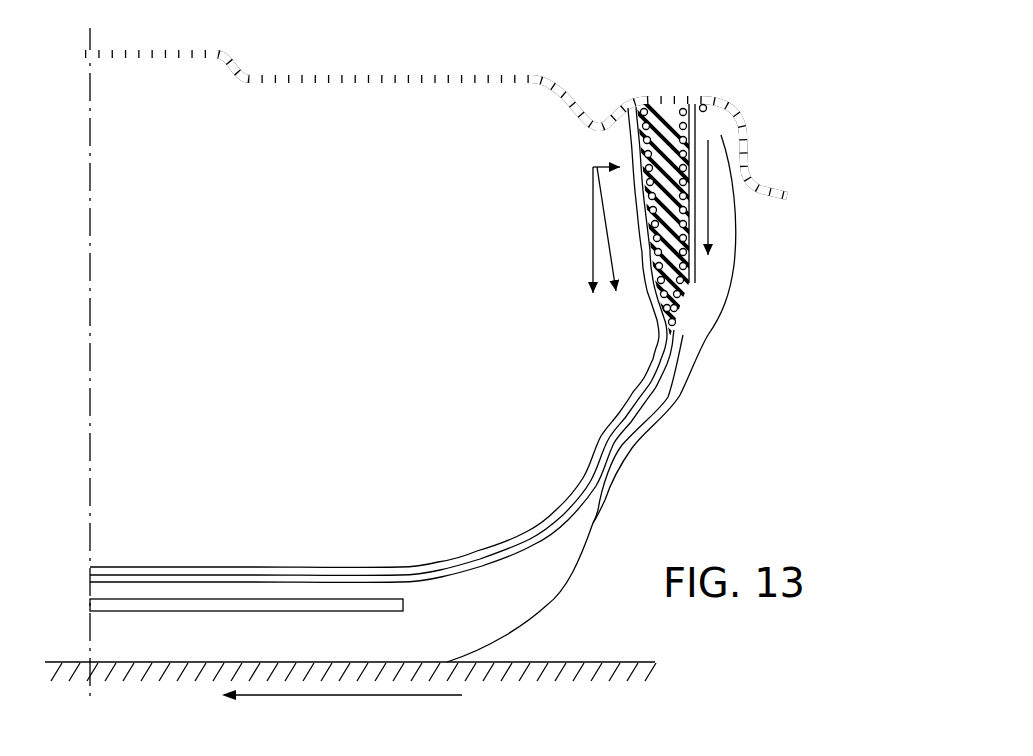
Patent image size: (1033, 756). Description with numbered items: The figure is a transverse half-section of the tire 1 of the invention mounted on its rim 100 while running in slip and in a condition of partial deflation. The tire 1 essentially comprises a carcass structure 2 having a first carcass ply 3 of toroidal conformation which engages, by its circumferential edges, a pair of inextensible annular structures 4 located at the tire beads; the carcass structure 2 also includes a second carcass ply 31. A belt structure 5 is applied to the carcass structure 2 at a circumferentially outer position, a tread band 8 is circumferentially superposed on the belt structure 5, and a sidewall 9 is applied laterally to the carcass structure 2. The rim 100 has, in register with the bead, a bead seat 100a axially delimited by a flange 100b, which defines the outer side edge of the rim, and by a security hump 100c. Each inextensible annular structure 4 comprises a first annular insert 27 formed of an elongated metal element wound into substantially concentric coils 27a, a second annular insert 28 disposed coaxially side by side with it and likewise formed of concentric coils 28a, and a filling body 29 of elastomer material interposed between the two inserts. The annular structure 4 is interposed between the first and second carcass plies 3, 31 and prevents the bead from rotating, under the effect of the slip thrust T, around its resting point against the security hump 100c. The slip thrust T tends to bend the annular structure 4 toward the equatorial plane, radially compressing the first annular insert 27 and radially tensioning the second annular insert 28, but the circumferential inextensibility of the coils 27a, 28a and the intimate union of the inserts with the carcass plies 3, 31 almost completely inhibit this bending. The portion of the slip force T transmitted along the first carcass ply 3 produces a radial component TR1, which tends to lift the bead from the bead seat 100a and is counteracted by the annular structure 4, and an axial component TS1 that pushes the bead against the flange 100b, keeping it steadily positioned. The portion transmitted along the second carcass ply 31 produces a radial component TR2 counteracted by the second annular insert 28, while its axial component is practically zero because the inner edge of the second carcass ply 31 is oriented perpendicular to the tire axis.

The tire 1 is at (733, 457).
The carcass structure 2 is at (658, 336).
The first carcass ply 3 is at (382, 344).
The inextensible annular structure 4 is at (702, 140).
The belt structure 5 is at (248, 598).
The tread band 8 is at (536, 617).
The sidewall 9 is at (701, 342).
The first annular insert 27 is at (697, 260).
The coils of the first annular insert 27a is at (686, 283).
The second annular insert 28 is at (651, 175).
The coils of the second annular insert 28a is at (646, 104).
The filling body 29 is at (669, 103).
The second carcass ply 31 is at (646, 397).
The rim 100 is at (486, 72).
The bead seat 100a is at (706, 105).
The flange 100b is at (749, 172).
The security hump 100c is at (584, 131).
The slip thrust T is at (307, 697).
The axial component of the slip force along the first carcass ply TS1 is at (603, 165).
The radial component of the slip force along the first carcass ply TR1 is at (593, 253).
The radial component of the slip force along the second carcass ply TR2 is at (710, 187).